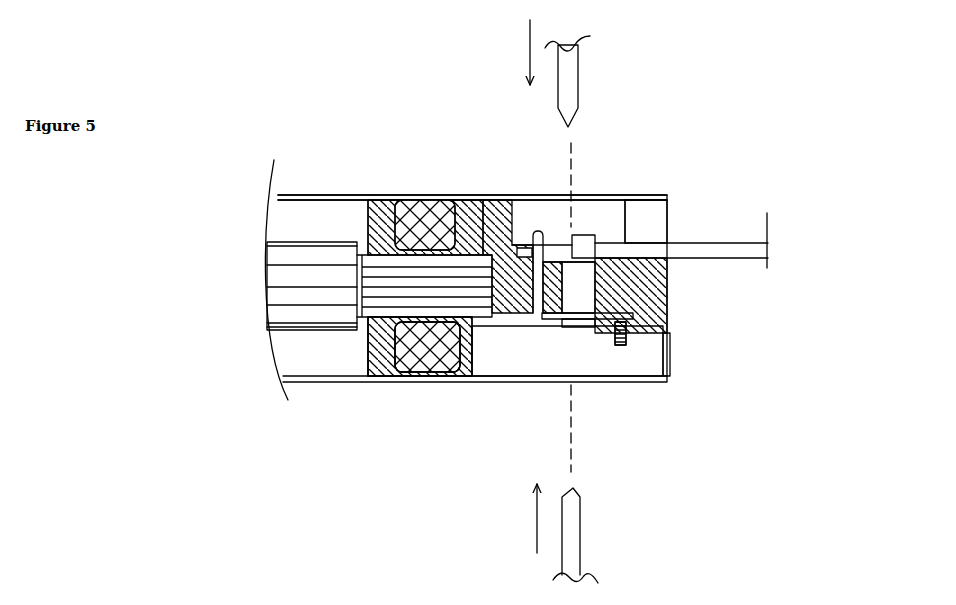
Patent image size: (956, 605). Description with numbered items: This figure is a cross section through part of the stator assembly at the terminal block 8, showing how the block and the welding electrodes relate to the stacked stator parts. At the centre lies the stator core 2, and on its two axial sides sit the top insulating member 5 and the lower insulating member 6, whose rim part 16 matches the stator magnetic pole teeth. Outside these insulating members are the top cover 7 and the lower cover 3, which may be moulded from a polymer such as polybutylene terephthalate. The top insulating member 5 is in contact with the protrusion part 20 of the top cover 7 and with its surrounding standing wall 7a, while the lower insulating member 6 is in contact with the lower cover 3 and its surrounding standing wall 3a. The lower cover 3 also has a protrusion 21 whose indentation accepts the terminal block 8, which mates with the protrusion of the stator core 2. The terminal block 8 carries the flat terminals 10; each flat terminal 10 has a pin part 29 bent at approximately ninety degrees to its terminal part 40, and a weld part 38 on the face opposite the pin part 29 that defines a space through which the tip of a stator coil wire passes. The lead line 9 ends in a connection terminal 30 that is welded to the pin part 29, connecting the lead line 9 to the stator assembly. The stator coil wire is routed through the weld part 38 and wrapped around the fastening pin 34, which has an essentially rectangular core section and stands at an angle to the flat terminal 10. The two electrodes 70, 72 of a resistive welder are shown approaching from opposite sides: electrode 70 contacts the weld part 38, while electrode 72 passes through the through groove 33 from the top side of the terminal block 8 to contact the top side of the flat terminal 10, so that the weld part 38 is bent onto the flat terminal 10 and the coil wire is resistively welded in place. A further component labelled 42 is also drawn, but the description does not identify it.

The stator core 2 is at (285, 296).
The lower cover 3 is at (348, 385).
The surrounding standing wall of lower cover 3a is at (673, 352).
The top insulating member 5 is at (465, 240).
The lower insulating member 6 is at (470, 325).
The top cover 7 is at (353, 198).
The surrounding standing wall of top cover 7a is at (662, 217).
The terminal block 8 is at (672, 308).
The lead line 9 is at (712, 235).
The flat terminal 10 is at (543, 330).
The rim part 16 is at (358, 222).
The protrusion part of top cover 20 is at (590, 230).
The protrusion of lower cover 21 is at (497, 376).
The pin part 29 is at (533, 231).
The connection terminal 30 is at (627, 196).
The through groove 33 is at (578, 297).
The fastening pin 34 is at (625, 340).
The weld part 38 is at (577, 333).
The terminal part 40 is at (626, 324).
The O-ring 42 is at (432, 372).
The electrode 70 is at (580, 527).
The electrode 72 is at (580, 73).